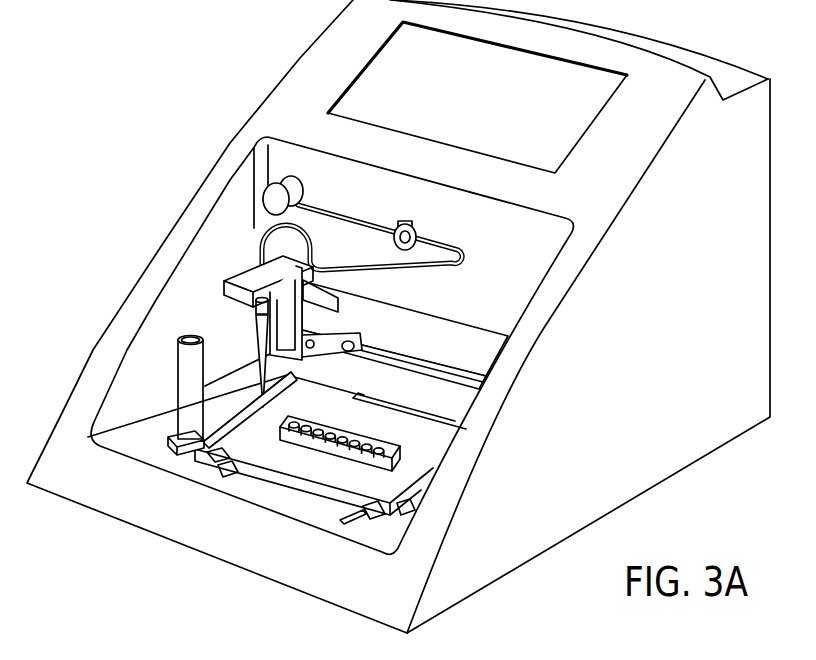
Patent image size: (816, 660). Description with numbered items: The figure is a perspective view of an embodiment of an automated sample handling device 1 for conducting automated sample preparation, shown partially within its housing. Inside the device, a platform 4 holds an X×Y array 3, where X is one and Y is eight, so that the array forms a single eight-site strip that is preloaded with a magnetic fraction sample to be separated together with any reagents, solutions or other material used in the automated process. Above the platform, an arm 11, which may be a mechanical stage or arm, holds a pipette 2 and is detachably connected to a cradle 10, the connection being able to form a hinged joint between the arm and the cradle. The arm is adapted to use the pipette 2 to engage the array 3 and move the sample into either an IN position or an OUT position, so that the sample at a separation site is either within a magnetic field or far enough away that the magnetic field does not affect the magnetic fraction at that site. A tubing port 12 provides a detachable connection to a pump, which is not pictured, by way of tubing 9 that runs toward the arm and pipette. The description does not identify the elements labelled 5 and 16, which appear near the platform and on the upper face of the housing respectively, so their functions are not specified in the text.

The automated sample handling device 1 is at (270, 102).
The pipette 2 is at (254, 320).
The X×Y array 3 is at (381, 455).
The platform 4 is at (213, 437).
The vial tray 5 is at (280, 433).
The tubing 9 is at (330, 208).
The cradle 10 is at (348, 332).
The arm 11 is at (240, 280).
The tubing port 12 is at (188, 364).
The display screen 16 is at (560, 132).